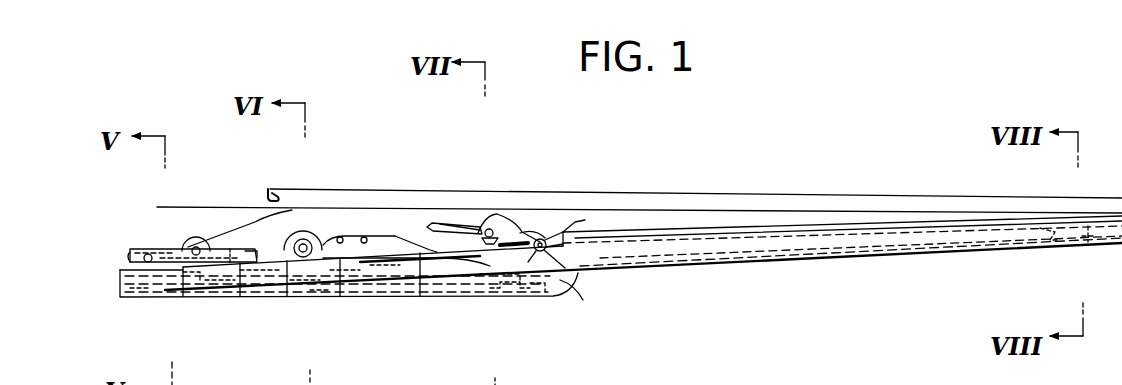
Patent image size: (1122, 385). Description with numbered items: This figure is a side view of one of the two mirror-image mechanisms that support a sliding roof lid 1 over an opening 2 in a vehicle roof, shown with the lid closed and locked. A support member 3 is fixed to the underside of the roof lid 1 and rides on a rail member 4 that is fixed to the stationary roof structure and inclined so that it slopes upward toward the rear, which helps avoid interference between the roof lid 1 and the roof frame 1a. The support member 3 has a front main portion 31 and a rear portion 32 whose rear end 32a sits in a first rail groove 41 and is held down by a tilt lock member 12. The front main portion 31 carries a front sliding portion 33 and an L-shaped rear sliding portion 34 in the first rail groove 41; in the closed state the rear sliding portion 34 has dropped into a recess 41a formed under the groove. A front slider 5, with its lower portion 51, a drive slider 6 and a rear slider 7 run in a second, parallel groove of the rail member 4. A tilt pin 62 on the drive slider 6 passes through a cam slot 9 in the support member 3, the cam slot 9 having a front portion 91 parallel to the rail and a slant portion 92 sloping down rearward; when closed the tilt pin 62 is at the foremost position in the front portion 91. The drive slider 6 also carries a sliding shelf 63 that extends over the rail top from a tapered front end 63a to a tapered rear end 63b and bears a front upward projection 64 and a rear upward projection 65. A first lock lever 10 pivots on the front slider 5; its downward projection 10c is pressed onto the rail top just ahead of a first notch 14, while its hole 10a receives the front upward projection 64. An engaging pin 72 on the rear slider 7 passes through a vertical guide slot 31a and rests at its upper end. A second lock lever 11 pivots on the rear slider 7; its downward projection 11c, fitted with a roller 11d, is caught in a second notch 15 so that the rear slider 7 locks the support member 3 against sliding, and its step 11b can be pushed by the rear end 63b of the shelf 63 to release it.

The roof lid 1 is at (746, 192).
The roof frame 1a is at (267, 203).
The opening 2 is at (281, 190).
The support member 3 is at (394, 223).
The rail member 4 is at (790, 262).
The front slider 5 is at (200, 237).
The drive slider 6 is at (319, 232).
The rear slider 7 is at (520, 233).
The cam slot 9 is at (405, 270).
The first lock lever 10 is at (160, 250).
The hole 10a is at (238, 243).
The downward projection 10c is at (148, 262).
The second lock lever 11 is at (546, 240).
The step 11b is at (520, 290).
The downward projection 11c is at (556, 257).
The roller 11d is at (582, 222).
The tilt lock member 12 is at (1090, 248).
The first notch 14 is at (172, 286).
The second notch 15 is at (583, 300).
The front main portion 31 is at (378, 218).
The guide slot 31a is at (490, 268).
The rear portion 32 is at (893, 211).
The rear end 32a is at (1052, 246).
The front sliding portion 33 is at (140, 292).
The rear sliding portion 34 is at (500, 290).
The first rail groove 41 is at (703, 255).
The recess 41a is at (536, 290).
The lower portion 51 is at (225, 292).
The tilt pin 62 is at (318, 300).
The sliding shelf 63 is at (340, 282).
The front end 63a is at (190, 286).
The rear end 63b is at (385, 266).
The front upward projection 64 is at (245, 286).
The rear upward projection 65 is at (305, 290).
The engaging pin 72 is at (485, 237).
The front portion 91 is at (345, 232).
The slant portion 92 is at (364, 232).